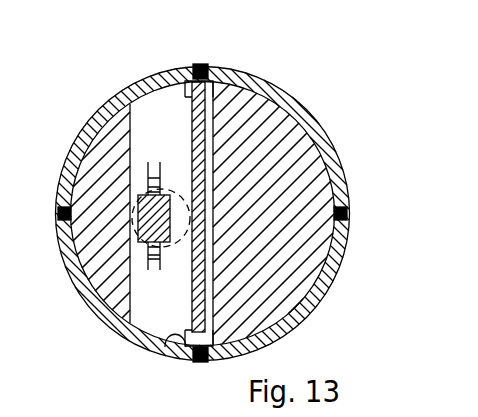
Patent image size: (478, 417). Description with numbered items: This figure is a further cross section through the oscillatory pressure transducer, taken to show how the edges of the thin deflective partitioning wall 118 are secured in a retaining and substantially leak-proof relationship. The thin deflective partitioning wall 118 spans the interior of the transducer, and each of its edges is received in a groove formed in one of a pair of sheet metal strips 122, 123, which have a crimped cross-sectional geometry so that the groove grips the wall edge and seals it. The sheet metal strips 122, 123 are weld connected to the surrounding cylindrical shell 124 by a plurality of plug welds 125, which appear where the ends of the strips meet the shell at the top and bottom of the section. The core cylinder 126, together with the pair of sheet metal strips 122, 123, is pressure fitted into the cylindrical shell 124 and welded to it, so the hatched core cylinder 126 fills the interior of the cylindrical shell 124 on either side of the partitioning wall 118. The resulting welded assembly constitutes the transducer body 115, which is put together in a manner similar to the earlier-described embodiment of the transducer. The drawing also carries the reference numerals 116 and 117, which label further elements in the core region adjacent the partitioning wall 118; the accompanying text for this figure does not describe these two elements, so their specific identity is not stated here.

The transducer body 115 is at (63, 250).
The sensor assembly 116 is at (153, 147).
The gap between plate and disk 117 is at (213, 152).
The thin deflective partitioning wall 118 is at (200, 143).
The sheet metal strip 122 is at (167, 64).
The sheet metal strip 123 is at (171, 334).
The cylindrical shell 124 is at (90, 111).
The plug welds 125 is at (200, 63).
The core cylinder 126 is at (267, 260).